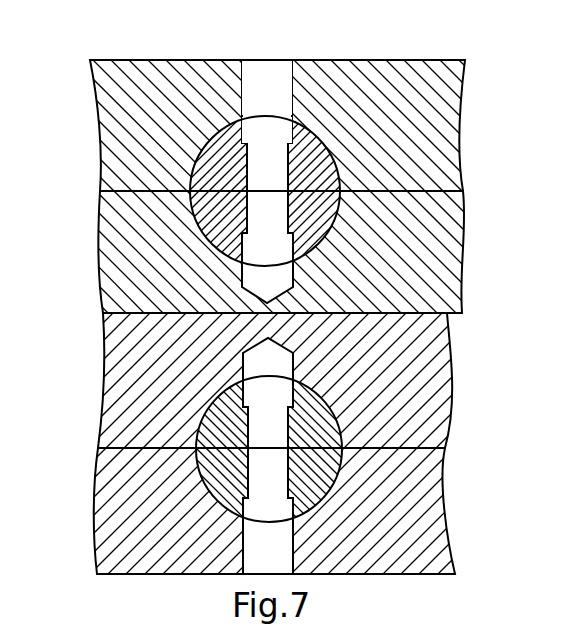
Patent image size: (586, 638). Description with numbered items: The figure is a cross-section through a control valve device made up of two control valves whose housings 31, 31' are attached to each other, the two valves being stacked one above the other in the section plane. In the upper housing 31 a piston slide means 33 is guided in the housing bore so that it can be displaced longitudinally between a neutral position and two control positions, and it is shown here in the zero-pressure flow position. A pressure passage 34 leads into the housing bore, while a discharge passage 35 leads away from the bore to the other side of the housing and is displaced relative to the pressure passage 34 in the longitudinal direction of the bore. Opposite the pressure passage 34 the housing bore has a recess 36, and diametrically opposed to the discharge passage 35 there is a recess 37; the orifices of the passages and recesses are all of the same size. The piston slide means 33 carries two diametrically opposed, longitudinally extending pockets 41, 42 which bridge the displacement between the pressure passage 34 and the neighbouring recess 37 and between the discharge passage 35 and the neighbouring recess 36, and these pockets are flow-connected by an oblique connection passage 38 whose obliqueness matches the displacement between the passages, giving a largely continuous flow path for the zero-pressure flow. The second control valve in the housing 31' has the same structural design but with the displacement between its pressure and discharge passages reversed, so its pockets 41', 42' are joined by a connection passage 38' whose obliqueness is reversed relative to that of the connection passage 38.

The housing 31 is at (277, 162).
The housing 31' is at (316, 443).
The piston slide means 33 is at (317, 172).
The pressure passage 34 is at (262, 85).
The discharge passage 35 is at (273, 552).
The recess 36 is at (262, 275).
The recess 37 is at (265, 368).
The connection passage 38 is at (267, 181).
The connection passage 38' is at (268, 456).
The pocket 41 is at (279, 77).
The pocket 41' is at (168, 384).
The pocket 42 is at (168, 249).
The pocket 42' is at (168, 503).